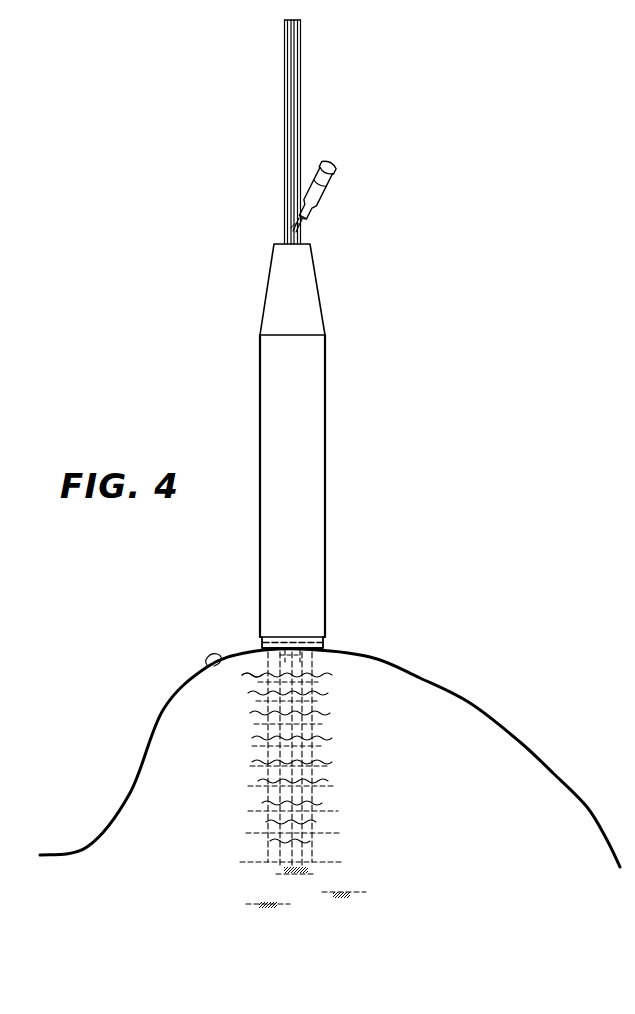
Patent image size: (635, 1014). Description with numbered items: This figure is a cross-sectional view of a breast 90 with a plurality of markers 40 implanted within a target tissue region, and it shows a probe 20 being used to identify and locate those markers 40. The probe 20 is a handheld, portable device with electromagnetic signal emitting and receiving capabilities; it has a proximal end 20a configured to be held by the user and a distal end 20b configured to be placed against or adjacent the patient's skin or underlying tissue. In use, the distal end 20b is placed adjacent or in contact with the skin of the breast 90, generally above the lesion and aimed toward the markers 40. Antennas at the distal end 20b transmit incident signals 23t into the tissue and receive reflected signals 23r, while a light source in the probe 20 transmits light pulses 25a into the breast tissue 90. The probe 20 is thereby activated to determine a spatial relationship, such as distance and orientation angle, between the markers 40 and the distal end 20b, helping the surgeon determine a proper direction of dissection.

The probe 20 is at (303, 334).
The proximal end 20a is at (262, 372).
The distal end 20b is at (325, 637).
The reflected signals 23r is at (246, 674).
The incident signals 23t is at (263, 812).
The light pulses 25a is at (272, 727).
The markers 40 is at (320, 903).
The breast 90 is at (560, 753).